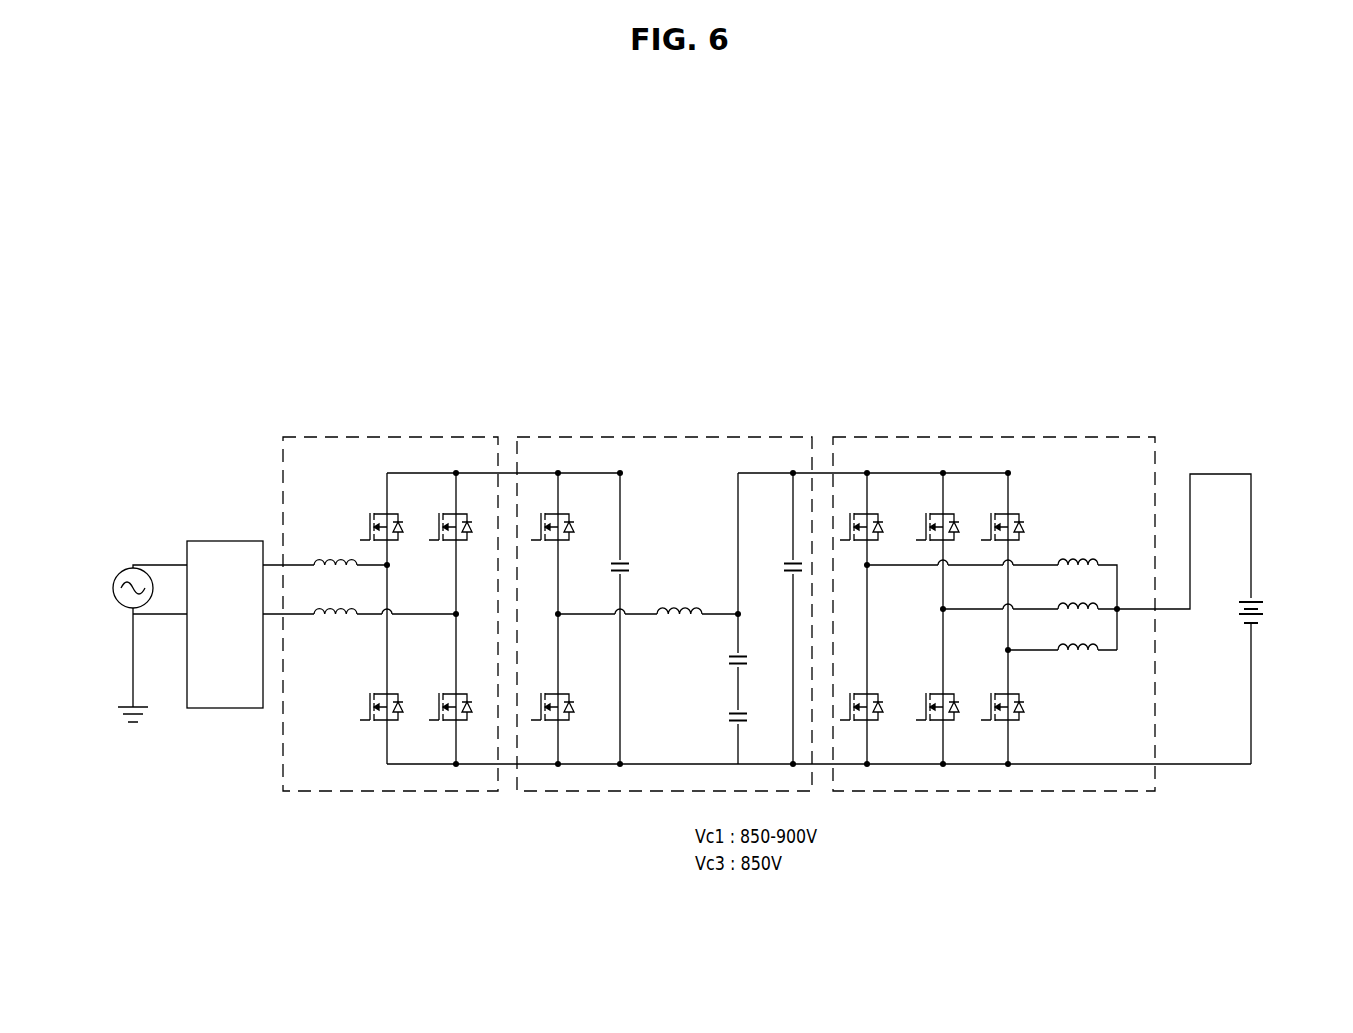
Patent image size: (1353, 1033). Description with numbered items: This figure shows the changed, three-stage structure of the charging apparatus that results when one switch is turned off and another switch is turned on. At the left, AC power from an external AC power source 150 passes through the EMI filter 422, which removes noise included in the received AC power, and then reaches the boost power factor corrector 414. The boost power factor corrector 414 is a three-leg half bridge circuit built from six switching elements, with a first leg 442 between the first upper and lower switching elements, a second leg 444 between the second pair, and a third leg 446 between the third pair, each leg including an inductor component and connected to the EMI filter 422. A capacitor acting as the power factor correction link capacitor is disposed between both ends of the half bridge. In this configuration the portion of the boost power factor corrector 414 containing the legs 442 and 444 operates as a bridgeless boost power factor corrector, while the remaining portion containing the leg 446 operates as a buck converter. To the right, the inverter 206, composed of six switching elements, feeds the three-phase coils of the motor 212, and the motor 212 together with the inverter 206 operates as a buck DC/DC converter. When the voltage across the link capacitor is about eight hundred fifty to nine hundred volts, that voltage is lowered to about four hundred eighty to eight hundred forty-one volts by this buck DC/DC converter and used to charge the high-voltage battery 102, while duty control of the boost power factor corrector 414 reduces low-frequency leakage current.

The AC power source 150 is at (127, 568).
The EMI filter 422 is at (220, 541).
The boost power factor corrector 414 is at (757, 569).
The first leg 442 is at (406, 566).
The second leg 444 is at (473, 615).
The third leg 446 is at (540, 615).
The motor 212 is at (1042, 569).
The inverter 206 is at (1007, 437).
The high-voltage battery 102 is at (1258, 598).